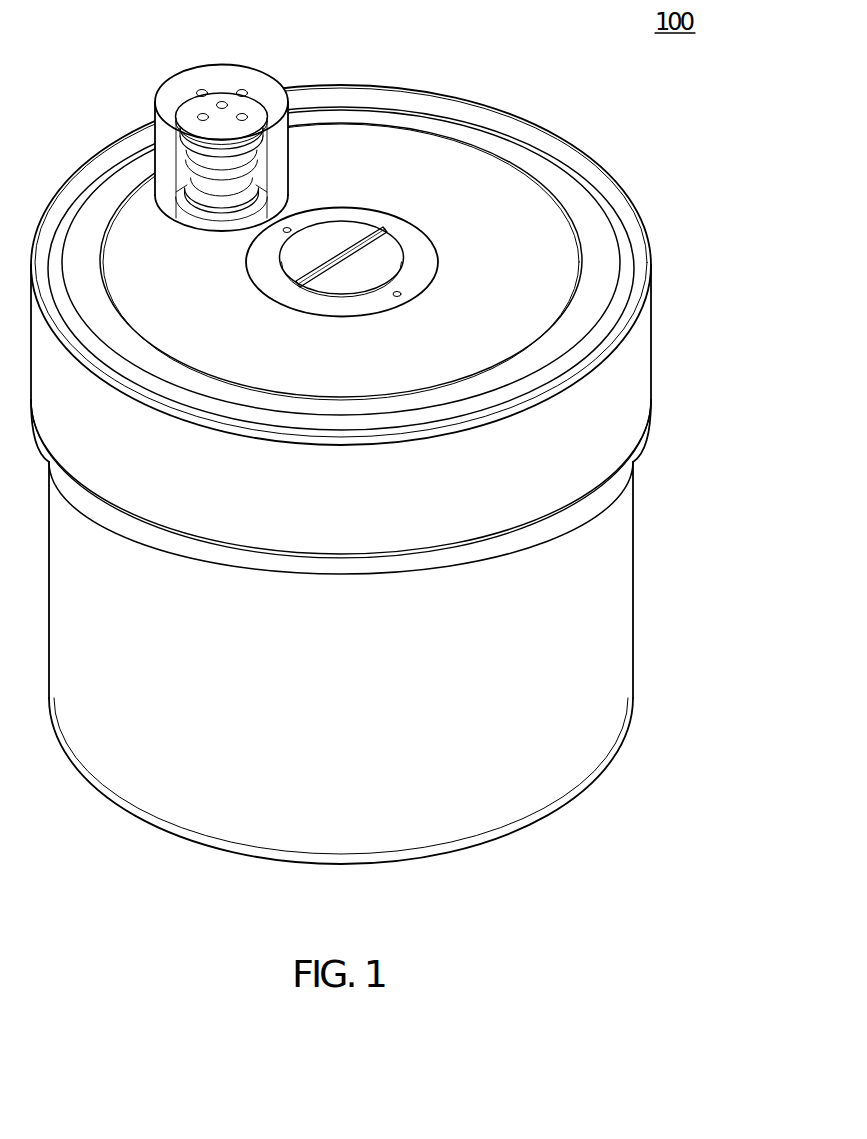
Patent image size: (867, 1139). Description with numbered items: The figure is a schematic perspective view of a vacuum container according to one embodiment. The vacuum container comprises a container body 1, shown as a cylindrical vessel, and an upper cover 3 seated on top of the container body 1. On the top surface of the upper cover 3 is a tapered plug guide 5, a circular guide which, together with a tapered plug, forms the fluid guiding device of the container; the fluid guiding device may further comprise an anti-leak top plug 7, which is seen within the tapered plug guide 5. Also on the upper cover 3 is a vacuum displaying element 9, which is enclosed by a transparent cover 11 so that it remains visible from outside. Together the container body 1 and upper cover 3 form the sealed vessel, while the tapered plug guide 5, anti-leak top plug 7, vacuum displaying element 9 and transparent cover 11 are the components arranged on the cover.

The container body 1 is at (612, 594).
The upper cover 3 is at (623, 375).
The tapered plug guide 5 is at (413, 250).
The anti-leak top plug 7 is at (333, 230).
The vacuum displaying element 9 is at (185, 172).
The transparent cover 11 is at (183, 83).